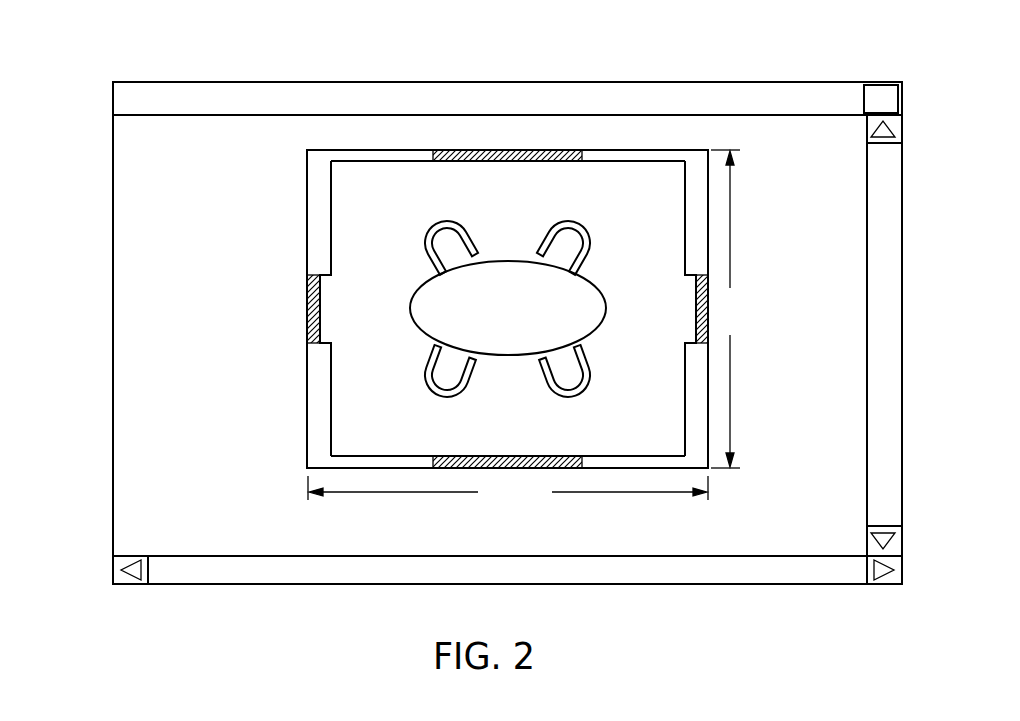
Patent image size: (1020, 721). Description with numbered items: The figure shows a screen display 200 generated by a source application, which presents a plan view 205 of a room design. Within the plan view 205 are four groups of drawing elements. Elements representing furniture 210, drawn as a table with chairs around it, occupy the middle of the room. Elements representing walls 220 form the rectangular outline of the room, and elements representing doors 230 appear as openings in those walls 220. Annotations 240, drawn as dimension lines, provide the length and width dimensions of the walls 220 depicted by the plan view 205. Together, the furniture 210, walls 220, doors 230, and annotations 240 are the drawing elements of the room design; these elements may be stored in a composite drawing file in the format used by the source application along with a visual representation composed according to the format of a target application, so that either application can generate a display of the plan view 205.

The screen display 200 is at (903, 187).
The plan view 205 is at (790, 143).
The furniture 210 is at (432, 218).
The walls 220 is at (306, 212).
The doors 230 is at (306, 308).
The annotations 240 is at (658, 492).